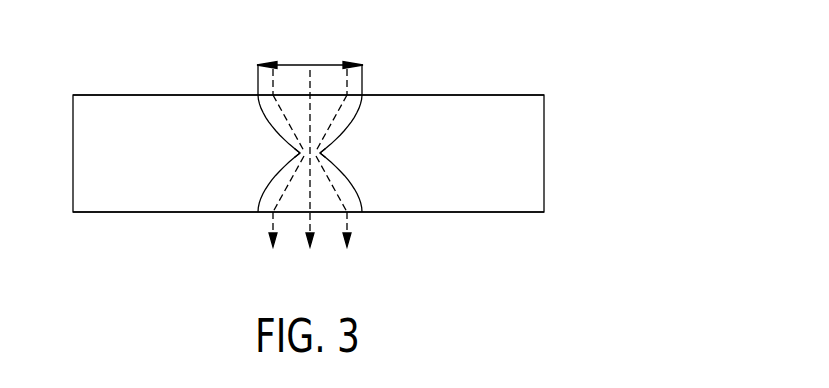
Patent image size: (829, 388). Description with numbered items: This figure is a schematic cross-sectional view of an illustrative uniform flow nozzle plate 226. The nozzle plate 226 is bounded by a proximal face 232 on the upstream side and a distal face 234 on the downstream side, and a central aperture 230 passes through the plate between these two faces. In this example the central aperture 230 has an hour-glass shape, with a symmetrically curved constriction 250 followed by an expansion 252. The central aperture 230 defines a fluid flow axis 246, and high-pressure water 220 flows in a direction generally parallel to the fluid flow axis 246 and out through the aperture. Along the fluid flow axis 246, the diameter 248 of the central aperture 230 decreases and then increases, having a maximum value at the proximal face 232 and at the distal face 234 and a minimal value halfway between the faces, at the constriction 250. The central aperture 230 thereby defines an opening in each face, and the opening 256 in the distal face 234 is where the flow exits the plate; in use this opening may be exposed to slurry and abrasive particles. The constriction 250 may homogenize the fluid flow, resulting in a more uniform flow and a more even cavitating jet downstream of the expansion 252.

The high-pressure water 220 is at (257, 82).
The nozzle plate 226 is at (97, 105).
The central aperture 230 is at (350, 113).
The proximal face 232 is at (507, 82).
The distal face 234 is at (506, 226).
The fluid flow axis 246 is at (305, 76).
The diameter 248 is at (333, 63).
The constriction 250 is at (350, 151).
The expansion 252 is at (390, 203).
The opening 256 is at (268, 214).